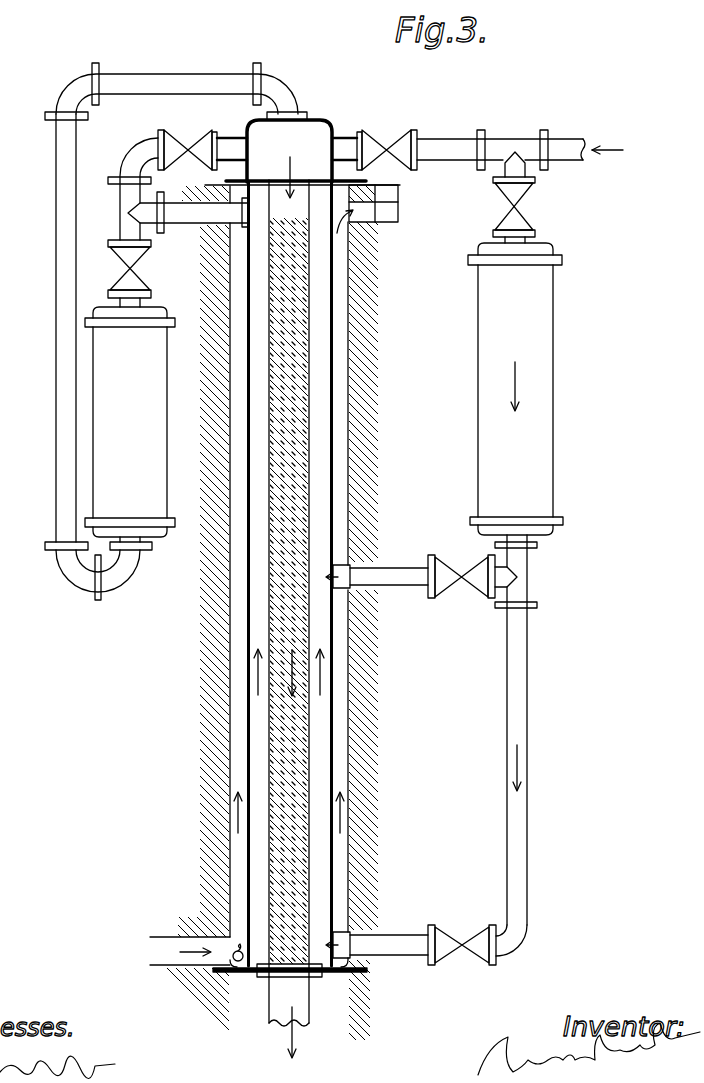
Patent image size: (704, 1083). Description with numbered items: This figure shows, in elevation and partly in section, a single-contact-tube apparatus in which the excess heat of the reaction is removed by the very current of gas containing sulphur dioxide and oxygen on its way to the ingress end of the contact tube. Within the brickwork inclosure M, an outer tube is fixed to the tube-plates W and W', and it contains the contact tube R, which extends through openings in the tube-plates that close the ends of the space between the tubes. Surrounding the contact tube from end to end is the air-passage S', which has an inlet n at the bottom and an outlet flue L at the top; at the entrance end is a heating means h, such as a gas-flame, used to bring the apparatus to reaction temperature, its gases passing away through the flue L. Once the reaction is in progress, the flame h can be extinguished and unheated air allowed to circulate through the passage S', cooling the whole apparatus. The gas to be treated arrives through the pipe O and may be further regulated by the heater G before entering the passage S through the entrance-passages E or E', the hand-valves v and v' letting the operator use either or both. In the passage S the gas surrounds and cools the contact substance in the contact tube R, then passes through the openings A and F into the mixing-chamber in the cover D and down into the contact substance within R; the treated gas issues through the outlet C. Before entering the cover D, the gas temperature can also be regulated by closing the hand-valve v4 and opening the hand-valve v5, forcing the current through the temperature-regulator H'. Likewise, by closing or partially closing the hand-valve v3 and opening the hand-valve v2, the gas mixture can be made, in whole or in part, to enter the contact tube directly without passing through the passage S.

The cover D is at (289, 159).
The opening F is at (398, 142).
The pipe O is at (588, 149).
The hand-valve v4 is at (185, 141).
The hand-valve v2 is at (389, 141).
The opening A is at (222, 213).
The hand-valve v5 is at (137, 269).
The temperature-regulator H' is at (130, 420).
The hand-valve v3 is at (525, 207).
The heater G is at (515, 386).
The hand-valve v' is at (472, 569).
The entrance-passage E' is at (377, 566).
The hand-valve v is at (462, 935).
The entrance-passage E is at (377, 936).
The flue L is at (368, 224).
The tube-plate W is at (302, 172).
The inclosure M is at (282, 613).
The air-passage S' is at (280, 576).
The passage S is at (290, 574).
The contact tube R is at (289, 578).
The tube-plate W' is at (308, 978).
The outlet C is at (289, 1011).
The inlet n is at (189, 951).
The heating means h is at (239, 937).